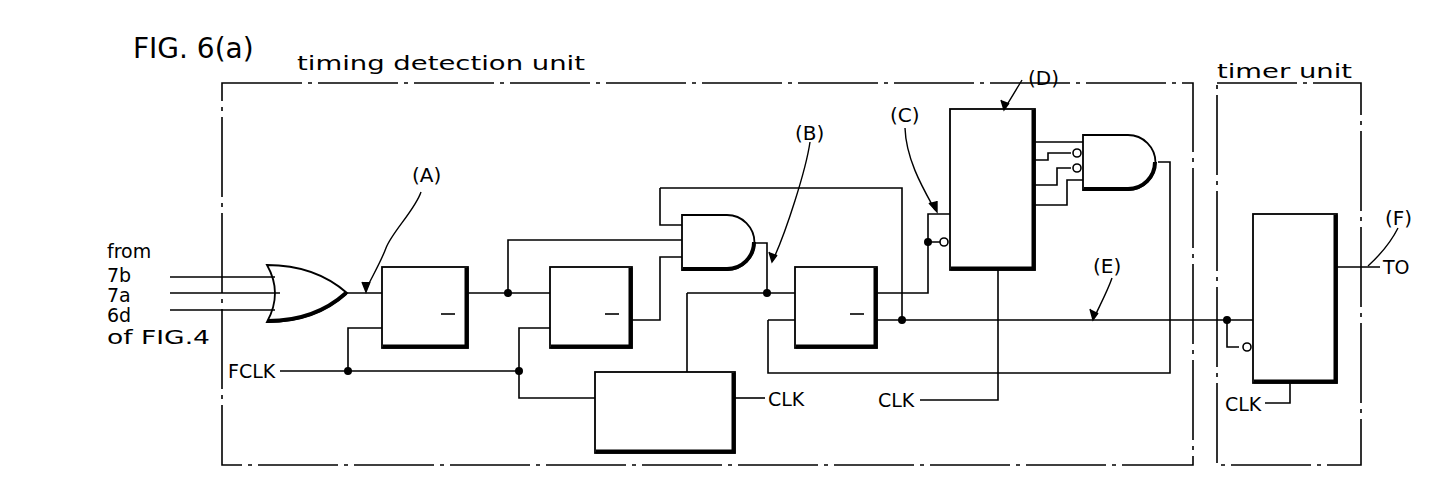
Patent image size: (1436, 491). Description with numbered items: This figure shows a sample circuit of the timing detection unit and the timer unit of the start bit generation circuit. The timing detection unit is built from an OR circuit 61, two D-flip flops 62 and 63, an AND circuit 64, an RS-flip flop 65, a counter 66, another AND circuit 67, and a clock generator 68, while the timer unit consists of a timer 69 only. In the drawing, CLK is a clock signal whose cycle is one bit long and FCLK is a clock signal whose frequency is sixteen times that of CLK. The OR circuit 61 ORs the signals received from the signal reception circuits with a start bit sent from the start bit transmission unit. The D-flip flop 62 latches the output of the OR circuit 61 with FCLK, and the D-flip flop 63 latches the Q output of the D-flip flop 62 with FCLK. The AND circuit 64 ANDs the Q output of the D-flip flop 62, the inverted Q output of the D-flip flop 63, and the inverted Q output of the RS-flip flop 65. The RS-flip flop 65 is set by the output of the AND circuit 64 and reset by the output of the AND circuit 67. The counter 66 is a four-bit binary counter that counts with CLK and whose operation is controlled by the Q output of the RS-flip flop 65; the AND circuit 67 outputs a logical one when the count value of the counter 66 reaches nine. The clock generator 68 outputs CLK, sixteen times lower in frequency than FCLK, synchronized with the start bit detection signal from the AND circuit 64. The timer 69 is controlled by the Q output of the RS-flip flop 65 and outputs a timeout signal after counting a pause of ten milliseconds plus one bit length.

The OR circuit 61 is at (290, 266).
The D-flip flop 62 is at (418, 266).
The D-flip flop 63 is at (572, 266).
The AND circuit 64 is at (733, 213).
The RS-flip flop 65 is at (842, 266).
The counter 66 is at (1040, 116).
The AND circuit 67 is at (1135, 135).
The clock generator 68 is at (707, 371).
The timer 69 is at (1292, 213).